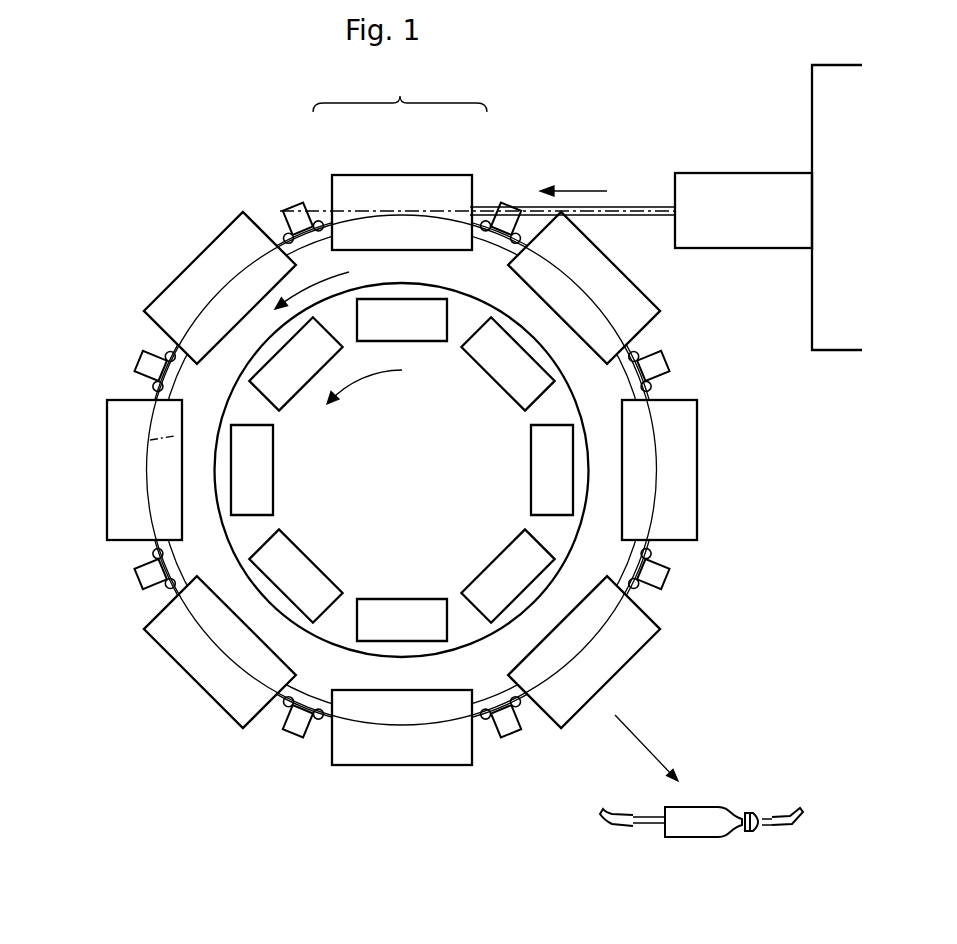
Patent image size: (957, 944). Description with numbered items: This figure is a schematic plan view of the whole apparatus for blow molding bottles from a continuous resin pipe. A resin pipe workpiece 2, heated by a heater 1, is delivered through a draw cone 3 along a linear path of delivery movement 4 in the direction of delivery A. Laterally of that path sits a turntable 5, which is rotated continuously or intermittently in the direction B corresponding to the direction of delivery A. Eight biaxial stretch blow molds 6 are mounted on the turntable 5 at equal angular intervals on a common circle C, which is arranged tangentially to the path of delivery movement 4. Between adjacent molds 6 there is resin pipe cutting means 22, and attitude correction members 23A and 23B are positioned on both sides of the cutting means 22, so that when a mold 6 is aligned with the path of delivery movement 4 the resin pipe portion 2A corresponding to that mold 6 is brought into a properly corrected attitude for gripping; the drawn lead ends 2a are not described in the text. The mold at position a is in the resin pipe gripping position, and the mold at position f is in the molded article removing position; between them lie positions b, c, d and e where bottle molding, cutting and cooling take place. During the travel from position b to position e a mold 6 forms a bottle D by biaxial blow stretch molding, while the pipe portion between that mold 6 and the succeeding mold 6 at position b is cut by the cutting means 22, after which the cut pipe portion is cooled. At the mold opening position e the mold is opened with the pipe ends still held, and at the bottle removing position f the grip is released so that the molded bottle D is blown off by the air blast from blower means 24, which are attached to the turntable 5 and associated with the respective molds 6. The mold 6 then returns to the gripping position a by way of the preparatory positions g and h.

The heater 1 is at (832, 352).
The resin pipe workpiece 2 is at (645, 206).
The resin pipe portion 2A is at (400, 91).
The lead wire ends of component 2a is at (608, 826).
The draw cone 3 is at (728, 180).
The path of delivery movement 4 is at (622, 205).
The turntable 5 is at (600, 520).
The biaxial stretch blow mold 6 is at (445, 185).
The resin pipe cutting means 22 is at (300, 206).
The attitude correction member 23A is at (282, 222).
The attitude correction member 23B is at (315, 218).
The blower means 24 is at (497, 570).
The direction of delivery A is at (572, 183).
The direction of rotation B is at (329, 281).
The common circle C is at (155, 441).
The bottle D is at (716, 806).
The resin pipe gripping position a is at (400, 151).
The position b is at (178, 247).
The position c is at (92, 470).
The position d is at (184, 697).
The mold opening position e is at (400, 772).
The molded article removing position f is at (620, 690).
The preparatory position g is at (716, 470).
The preparatory position h is at (627, 235).